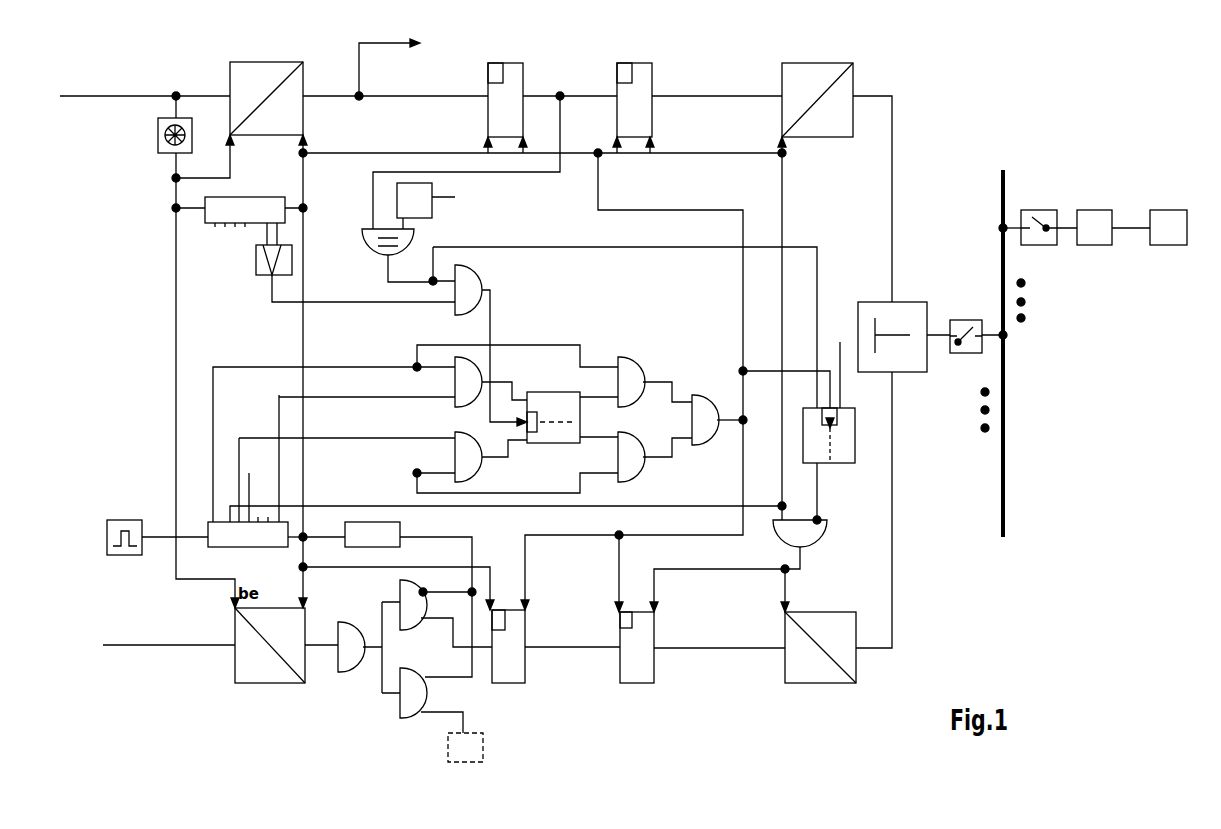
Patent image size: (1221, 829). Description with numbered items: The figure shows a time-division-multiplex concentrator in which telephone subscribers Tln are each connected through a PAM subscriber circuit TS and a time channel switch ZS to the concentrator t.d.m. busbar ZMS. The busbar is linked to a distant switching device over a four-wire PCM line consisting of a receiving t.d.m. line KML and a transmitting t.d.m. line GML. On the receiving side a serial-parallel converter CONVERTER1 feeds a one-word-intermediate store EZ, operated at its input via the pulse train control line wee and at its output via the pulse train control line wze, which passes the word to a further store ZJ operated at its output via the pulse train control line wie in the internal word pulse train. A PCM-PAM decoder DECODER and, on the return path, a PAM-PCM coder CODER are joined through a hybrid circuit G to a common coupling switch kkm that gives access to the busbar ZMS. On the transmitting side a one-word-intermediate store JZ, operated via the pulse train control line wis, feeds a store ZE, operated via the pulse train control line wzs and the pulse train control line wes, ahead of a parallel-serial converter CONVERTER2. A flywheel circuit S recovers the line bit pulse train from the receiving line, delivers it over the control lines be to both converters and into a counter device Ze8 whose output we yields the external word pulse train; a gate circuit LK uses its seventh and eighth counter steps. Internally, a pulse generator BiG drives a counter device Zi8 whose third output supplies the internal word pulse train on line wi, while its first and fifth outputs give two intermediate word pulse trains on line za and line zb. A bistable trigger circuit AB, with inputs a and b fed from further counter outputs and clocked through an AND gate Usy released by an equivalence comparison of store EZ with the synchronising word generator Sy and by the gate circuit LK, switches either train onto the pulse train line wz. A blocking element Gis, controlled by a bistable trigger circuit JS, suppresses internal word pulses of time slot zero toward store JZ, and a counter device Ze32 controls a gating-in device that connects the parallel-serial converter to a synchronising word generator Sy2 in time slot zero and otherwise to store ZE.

The receiving t.d.m. line KML is at (145, 86).
The flywheel circuit S is at (165, 135).
The serial-parallel converter CONVERTER1 is at (283, 62).
The control line be is at (216, 156).
The output of counter device Ze8 we is at (301, 205).
The counter device Ze8 is at (205, 217).
The gate circuit LK is at (262, 277).
The one-word-intermediate store EZ is at (458, 78).
The store ZJ is at (668, 78).
The pulse train control line wee is at (542, 146).
The pulse train control line wze is at (632, 379).
The pulse train control line wie is at (798, 328).
The PCM-PAM decoder DECODER is at (853, 68).
The synchronising word generator Sy is at (444, 232).
The AND gate Usy is at (491, 337).
The input of bistable trigger circuit AB a is at (403, 382).
The input of bistable trigger circuit AB b is at (383, 457).
The line za is at (517, 356).
The line zb is at (517, 483).
The bistable trigger circuit AB is at (582, 456).
The pulse train line wz is at (745, 421).
The line wi is at (506, 504).
The bistable trigger circuit JS is at (848, 480).
The line L is at (840, 364).
The blocking element Gis is at (752, 553).
The pulse train control line wis is at (771, 588).
The pulse train control line wzs is at (604, 573).
The hybrid circuit G is at (874, 302).
The coupling switch kkm is at (1012, 358).
The concentrator t.d.m. busbar ZMS is at (1002, 342).
The time channel switch ZS is at (1030, 216).
The PAM subscriber circuit TS is at (1083, 266).
The telephone subscriber Tln is at (1140, 180).
The pulse generator BiG is at (80, 540).
The counter device Zi8 is at (213, 548).
The counter device Ze32 is at (389, 599).
The pulse train control line wes is at (398, 588).
The transmitting t.d.m. line GML is at (169, 658).
The parallel-serial converter CONVERTER2 is at (265, 684).
The synchronising word generator Sy2 is at (465, 747).
The store ZE is at (538, 688).
The one-word-intermediate store JZ is at (666, 690).
The PAM-PCM coder CODER is at (835, 685).